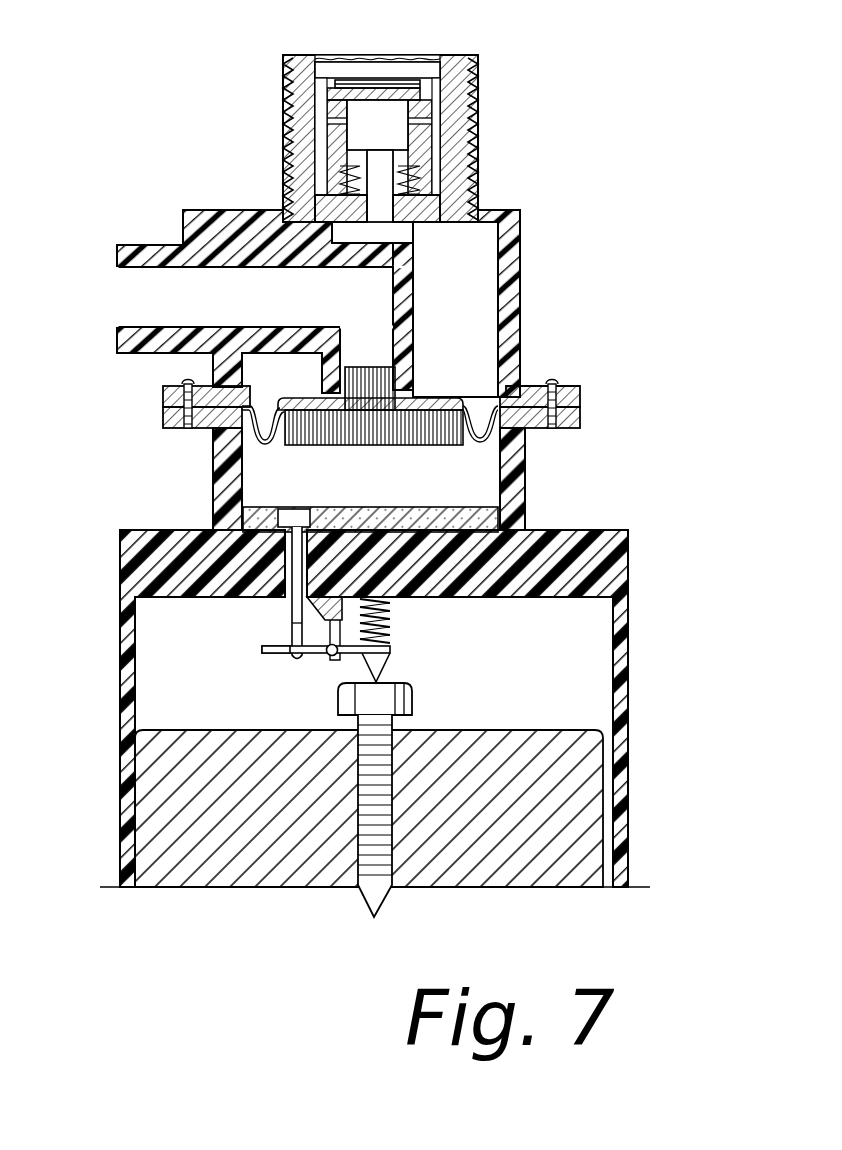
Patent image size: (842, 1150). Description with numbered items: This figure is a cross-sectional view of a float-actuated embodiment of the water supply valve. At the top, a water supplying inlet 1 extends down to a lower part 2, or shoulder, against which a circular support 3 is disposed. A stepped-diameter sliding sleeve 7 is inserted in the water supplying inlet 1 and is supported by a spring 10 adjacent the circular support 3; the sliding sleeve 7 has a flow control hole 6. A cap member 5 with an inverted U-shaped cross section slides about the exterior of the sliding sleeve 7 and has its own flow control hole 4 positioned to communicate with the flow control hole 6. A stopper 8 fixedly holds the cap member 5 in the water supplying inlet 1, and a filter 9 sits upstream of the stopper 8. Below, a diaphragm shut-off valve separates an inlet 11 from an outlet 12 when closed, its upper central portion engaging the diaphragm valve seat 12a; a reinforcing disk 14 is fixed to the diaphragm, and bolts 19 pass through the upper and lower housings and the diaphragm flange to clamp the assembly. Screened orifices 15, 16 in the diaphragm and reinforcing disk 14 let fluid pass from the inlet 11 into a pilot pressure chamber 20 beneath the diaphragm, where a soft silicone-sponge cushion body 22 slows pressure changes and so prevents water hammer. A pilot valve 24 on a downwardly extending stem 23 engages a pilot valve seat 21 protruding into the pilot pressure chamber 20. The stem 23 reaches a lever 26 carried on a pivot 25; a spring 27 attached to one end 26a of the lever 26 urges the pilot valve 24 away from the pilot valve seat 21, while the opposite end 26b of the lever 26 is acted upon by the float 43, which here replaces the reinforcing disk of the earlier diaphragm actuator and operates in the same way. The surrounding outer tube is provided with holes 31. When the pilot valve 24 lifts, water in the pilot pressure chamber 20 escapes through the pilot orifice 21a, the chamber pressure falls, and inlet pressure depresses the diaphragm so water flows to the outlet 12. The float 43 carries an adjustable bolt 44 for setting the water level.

The water supplying inlet 1 is at (300, 57).
The lower part 2 is at (325, 238).
The circular support 3 is at (417, 212).
The flow control hole 4 is at (330, 126).
The cap member 5 is at (335, 86).
The flow control hole 6 is at (333, 98).
The sliding sleeve 7 is at (413, 157).
The stopper 8 is at (415, 70).
The filter 9 is at (432, 56).
The spring 10 is at (410, 181).
The inlet 11 is at (480, 290).
The outlet 12 is at (130, 302).
The diaphragm valve seat 12a is at (405, 400).
The reinforcing disk 14 is at (462, 444).
The screened orifice 15 is at (301, 412).
The screened orifice 16 is at (299, 438).
The bolts 19 is at (554, 384).
The pilot pressure chamber 20 is at (475, 473).
The pilot valve seat 21 is at (284, 530).
The pilot orifice 21a is at (290, 600).
The cushion body 22 is at (480, 521).
The stem 23 is at (293, 616).
The pilot valve 24 is at (298, 518).
The pivot 25 is at (328, 662).
The lever 26 is at (318, 655).
The end of lever 26a is at (392, 650).
The lever end 26b is at (262, 650).
The spring 27 is at (388, 612).
The holes 31 is at (615, 794).
The float 43 is at (582, 750).
The adjustable bolt 44 is at (410, 693).